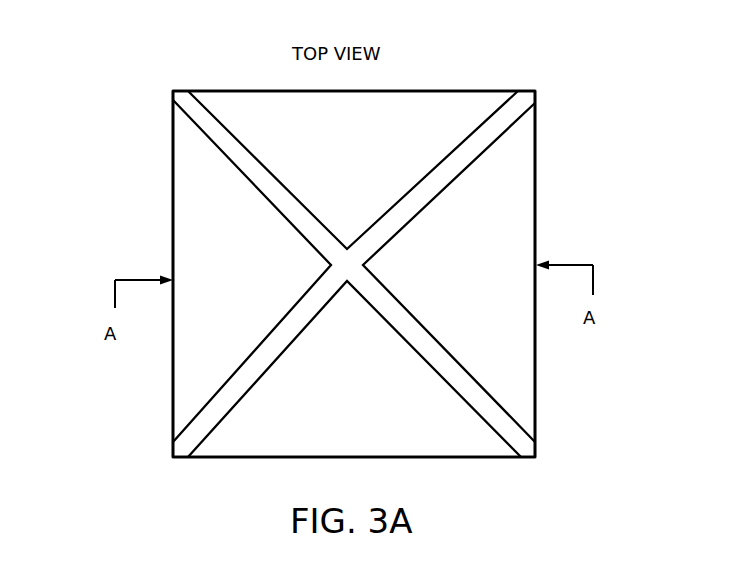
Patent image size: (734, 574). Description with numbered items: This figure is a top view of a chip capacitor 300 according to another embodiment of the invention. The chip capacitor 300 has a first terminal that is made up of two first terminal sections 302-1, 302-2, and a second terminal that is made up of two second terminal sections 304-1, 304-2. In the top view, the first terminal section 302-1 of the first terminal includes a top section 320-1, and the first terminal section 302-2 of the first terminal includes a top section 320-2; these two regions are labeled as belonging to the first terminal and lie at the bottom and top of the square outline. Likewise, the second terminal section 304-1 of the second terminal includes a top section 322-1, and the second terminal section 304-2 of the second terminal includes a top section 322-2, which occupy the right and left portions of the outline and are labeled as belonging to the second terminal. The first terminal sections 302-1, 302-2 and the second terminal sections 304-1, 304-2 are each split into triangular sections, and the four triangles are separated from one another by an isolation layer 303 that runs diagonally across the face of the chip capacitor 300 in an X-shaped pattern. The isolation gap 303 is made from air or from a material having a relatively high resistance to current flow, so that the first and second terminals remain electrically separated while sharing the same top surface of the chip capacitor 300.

The chip capacitor 300 is at (589, 98).
The first terminal section 302-1 is at (459, 467).
The first terminal section 302-2 is at (454, 77).
The isolation layer 303 is at (187, 103).
The second terminal section 304-1 is at (548, 184).
The second terminal section 304-2 is at (160, 220).
The top section 320-1 is at (368, 446).
The top section 320-2 is at (386, 196).
The top section 322-1 is at (516, 346).
The top section 322-2 is at (254, 330).